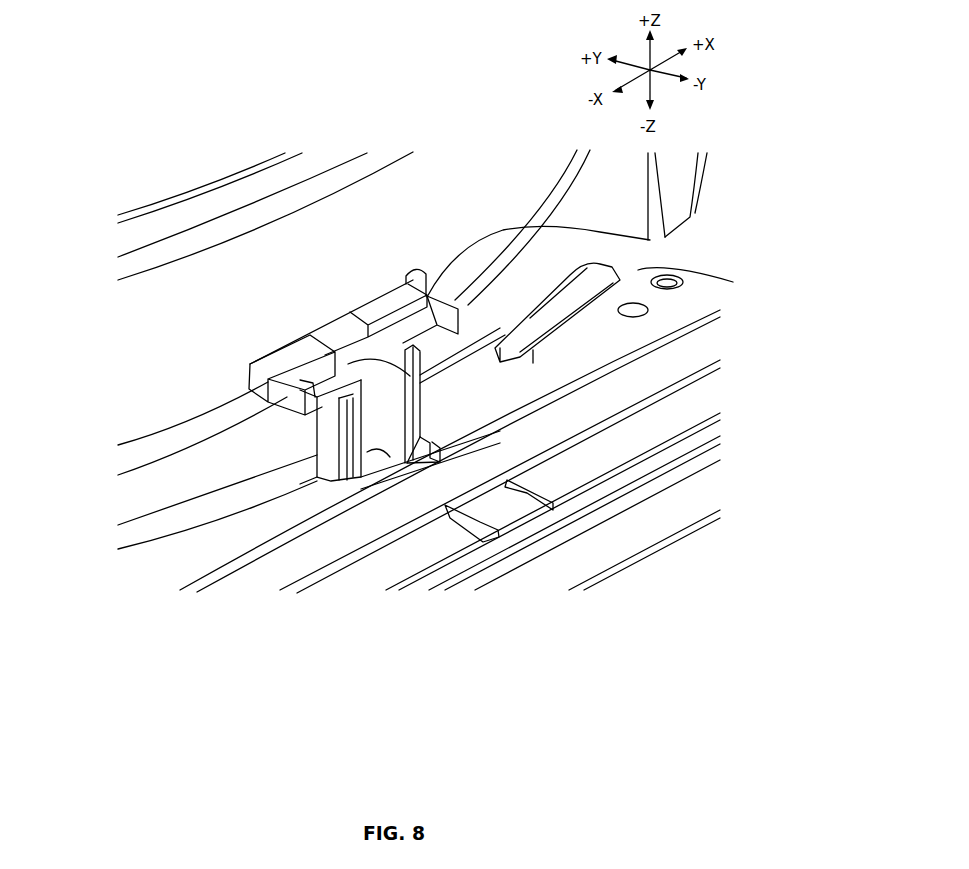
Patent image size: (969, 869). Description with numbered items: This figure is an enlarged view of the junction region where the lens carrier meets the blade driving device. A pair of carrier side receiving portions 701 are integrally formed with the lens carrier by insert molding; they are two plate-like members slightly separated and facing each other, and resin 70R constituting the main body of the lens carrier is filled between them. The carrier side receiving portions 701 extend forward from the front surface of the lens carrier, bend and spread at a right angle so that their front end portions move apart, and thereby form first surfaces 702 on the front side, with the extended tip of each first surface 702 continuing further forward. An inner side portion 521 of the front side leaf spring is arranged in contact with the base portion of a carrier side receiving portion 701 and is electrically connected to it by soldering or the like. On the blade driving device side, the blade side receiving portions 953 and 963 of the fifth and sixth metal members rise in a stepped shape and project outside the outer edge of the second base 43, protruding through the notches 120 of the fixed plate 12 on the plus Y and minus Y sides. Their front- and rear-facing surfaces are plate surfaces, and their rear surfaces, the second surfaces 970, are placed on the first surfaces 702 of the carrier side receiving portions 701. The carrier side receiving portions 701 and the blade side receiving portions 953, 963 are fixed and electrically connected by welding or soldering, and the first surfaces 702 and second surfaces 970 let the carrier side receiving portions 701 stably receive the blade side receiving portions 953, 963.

The fixed plate 12 is at (135, 346).
The notch 120 is at (348, 316).
The blade side receiving portion 963 is at (305, 331).
The blade side receiving portion 953 is at (650, 240).
The inner side portion 521 is at (268, 661).
The first surface 702 is at (405, 414).
The second base 43 is at (247, 420).
The second surface 970 is at (352, 308).
The carrier side receiving portion 701 is at (389, 440).
The resin 70R is at (425, 430).